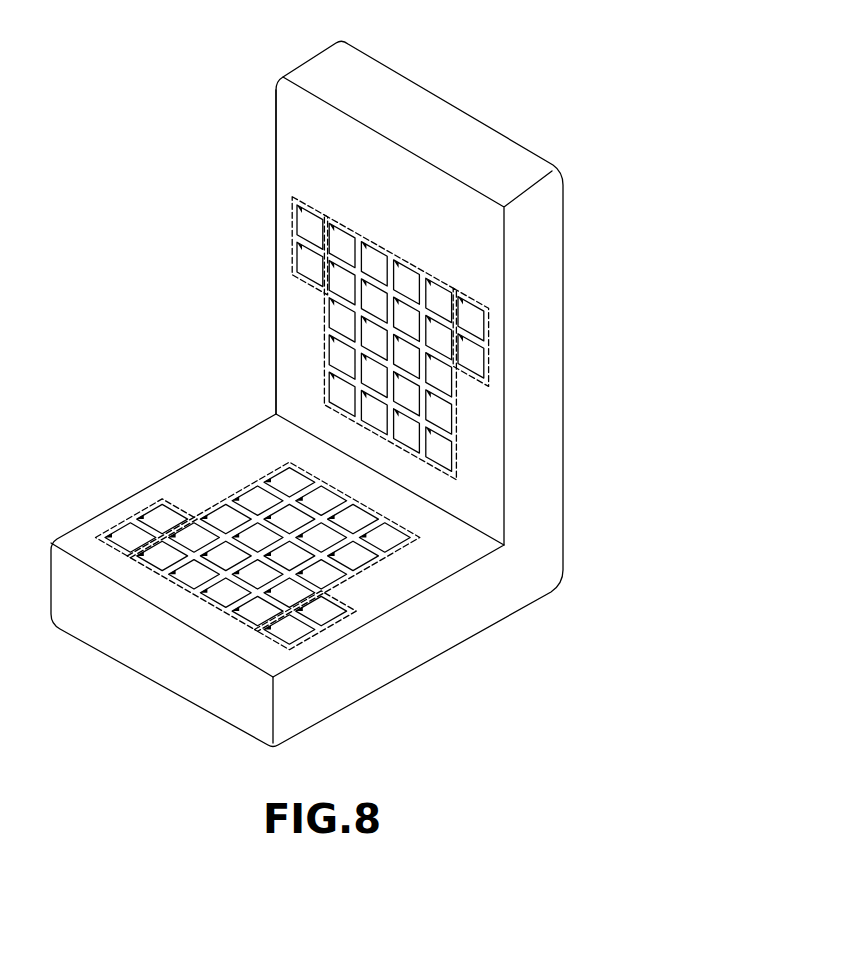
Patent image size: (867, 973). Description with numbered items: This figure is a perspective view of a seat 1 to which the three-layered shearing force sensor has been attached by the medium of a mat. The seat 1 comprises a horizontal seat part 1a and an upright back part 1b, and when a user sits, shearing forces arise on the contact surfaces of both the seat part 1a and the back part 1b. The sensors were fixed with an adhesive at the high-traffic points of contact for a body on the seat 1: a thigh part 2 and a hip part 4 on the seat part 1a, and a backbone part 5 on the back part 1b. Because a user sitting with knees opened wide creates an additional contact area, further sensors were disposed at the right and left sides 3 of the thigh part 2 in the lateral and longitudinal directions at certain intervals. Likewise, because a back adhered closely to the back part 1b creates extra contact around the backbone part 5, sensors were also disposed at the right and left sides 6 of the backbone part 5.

The seat 1 is at (462, 108).
The seat part 1a is at (250, 428).
The back part 1b is at (276, 160).
The thigh part 2 is at (153, 570).
The right and left sides of the thigh part 3 is at (122, 522).
The hip part 4 is at (376, 552).
The backbone part 5 is at (453, 428).
The right and left sides of the backbone part 6 is at (293, 247).